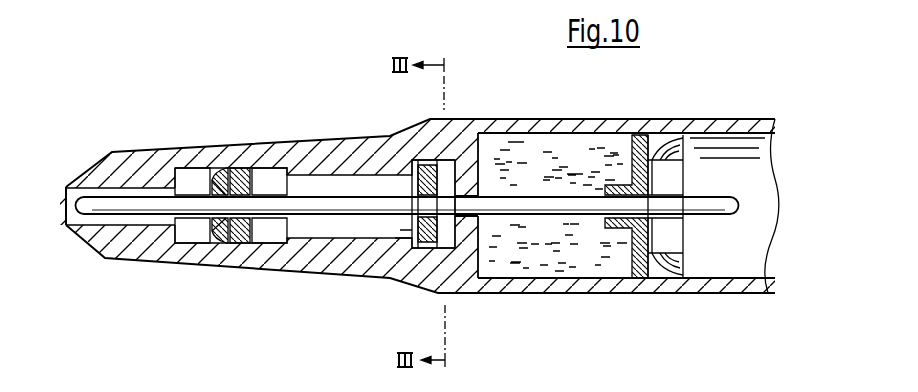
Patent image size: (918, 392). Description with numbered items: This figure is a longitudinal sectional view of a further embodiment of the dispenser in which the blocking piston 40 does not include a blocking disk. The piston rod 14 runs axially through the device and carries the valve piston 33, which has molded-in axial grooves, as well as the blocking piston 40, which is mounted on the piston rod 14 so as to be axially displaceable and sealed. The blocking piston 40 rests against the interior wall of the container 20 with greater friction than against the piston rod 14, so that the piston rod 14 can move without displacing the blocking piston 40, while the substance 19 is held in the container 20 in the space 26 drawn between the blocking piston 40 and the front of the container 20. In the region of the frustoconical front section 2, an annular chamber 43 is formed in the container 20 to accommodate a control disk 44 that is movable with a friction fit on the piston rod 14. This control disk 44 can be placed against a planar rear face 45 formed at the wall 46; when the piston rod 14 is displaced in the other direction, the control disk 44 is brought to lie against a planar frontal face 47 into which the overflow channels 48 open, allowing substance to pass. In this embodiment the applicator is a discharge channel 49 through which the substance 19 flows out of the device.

The frustoconical front section 2 is at (343, 148).
The piston rod 14 is at (311, 197).
The substance 19 is at (594, 272).
The container 20 is at (557, 282).
The upper liquid chamber 26 is at (490, 183).
The valve piston 33 is at (235, 167).
The blocking piston 40 is at (643, 142).
The annular chamber 43 is at (455, 128).
The control disk 44 is at (430, 248).
The planar rear face 45 is at (470, 183).
The wall 46 is at (467, 242).
The planar frontal face 47 is at (413, 228).
The overflow channels 48 is at (399, 165).
The discharge channel 49 is at (140, 224).